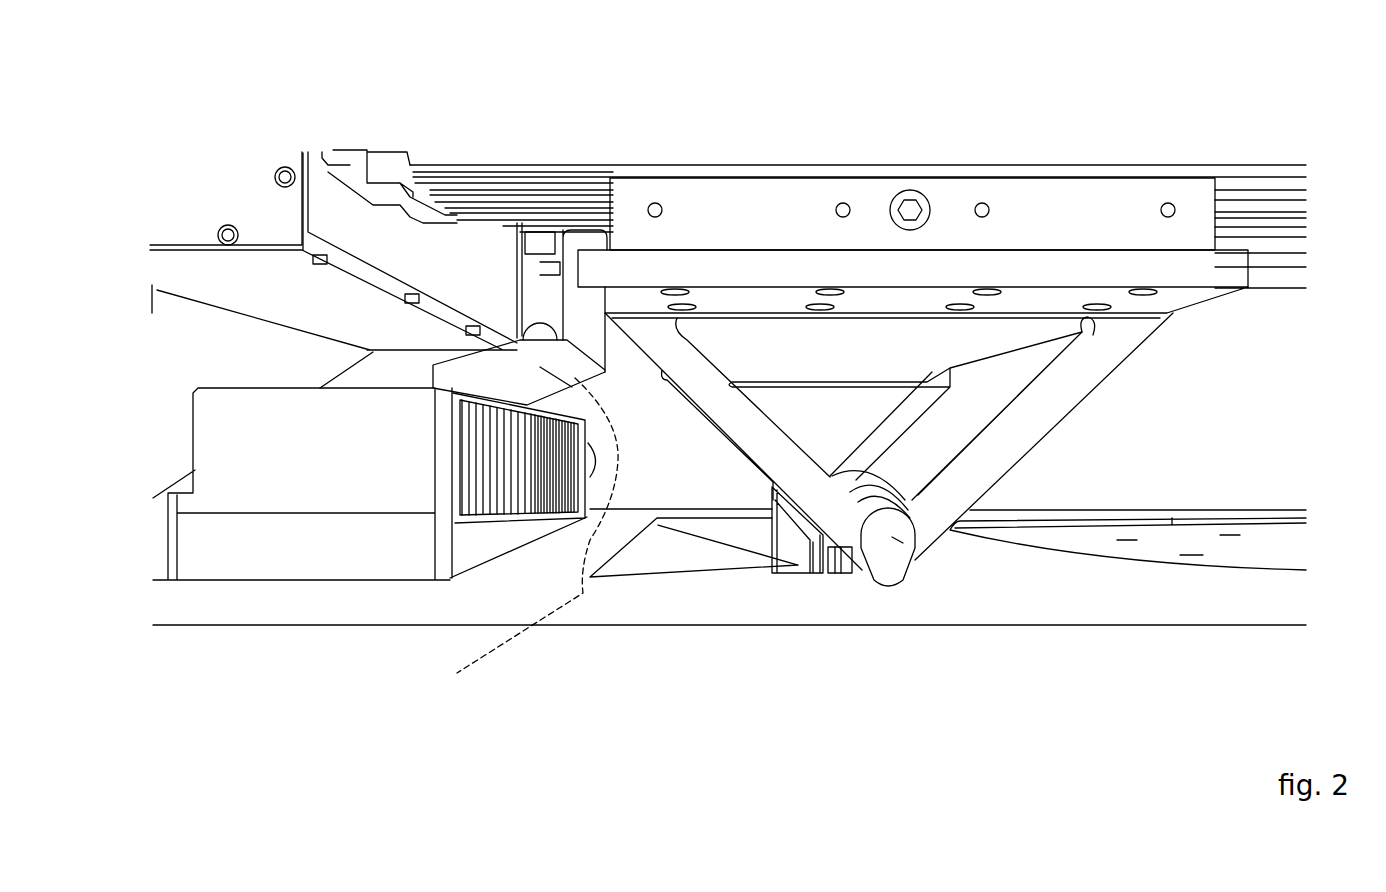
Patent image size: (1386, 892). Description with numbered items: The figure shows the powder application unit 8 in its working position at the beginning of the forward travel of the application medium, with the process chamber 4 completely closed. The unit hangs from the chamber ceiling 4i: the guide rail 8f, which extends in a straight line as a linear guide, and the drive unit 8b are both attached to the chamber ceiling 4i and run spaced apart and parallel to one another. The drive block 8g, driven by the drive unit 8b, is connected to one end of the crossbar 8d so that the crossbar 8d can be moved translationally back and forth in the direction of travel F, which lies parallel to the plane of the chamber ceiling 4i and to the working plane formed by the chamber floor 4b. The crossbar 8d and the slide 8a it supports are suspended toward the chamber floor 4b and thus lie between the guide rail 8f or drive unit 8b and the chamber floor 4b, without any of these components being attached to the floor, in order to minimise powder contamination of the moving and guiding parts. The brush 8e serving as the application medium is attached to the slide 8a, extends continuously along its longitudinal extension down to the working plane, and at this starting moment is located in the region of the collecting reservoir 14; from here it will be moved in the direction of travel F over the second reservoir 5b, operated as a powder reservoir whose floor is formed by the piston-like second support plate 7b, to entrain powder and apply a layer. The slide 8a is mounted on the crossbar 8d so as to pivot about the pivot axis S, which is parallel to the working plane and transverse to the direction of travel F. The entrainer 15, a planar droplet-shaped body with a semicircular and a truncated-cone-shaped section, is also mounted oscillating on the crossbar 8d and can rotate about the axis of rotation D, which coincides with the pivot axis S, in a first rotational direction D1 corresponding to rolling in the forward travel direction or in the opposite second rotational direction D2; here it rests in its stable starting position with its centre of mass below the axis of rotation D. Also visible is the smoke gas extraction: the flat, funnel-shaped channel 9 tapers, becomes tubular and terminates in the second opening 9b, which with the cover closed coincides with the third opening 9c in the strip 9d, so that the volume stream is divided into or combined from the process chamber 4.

The powder application unit 8 is at (647, 137).
The drive unit 8b is at (461, 157).
The guide rail 8f is at (540, 250).
The chamber ceiling 4i is at (513, 166).
The drive block 8g is at (1120, 208).
The process chamber 4 is at (1287, 317).
The crossbar 8d is at (955, 387).
The channel 9 is at (519, 524).
The strip 9d is at (313, 543).
The second opening 9b is at (410, 378).
The third opening 9c is at (366, 441).
The collecting reservoir 14 is at (638, 562).
The chamber floor 4b is at (940, 598).
The slide 8a is at (797, 578).
The brush 8e is at (853, 587).
The entrainer 15 is at (890, 590).
The first rotational direction D1 is at (875, 465).
The second rotational direction D2 is at (897, 473).
The second support plate 7b is at (1256, 553).
The second reservoir 5b is at (1280, 560).
The pivot axis S is at (920, 550).
The axis of rotation D is at (1123, 662).
The direction of travel F is at (1050, 593).